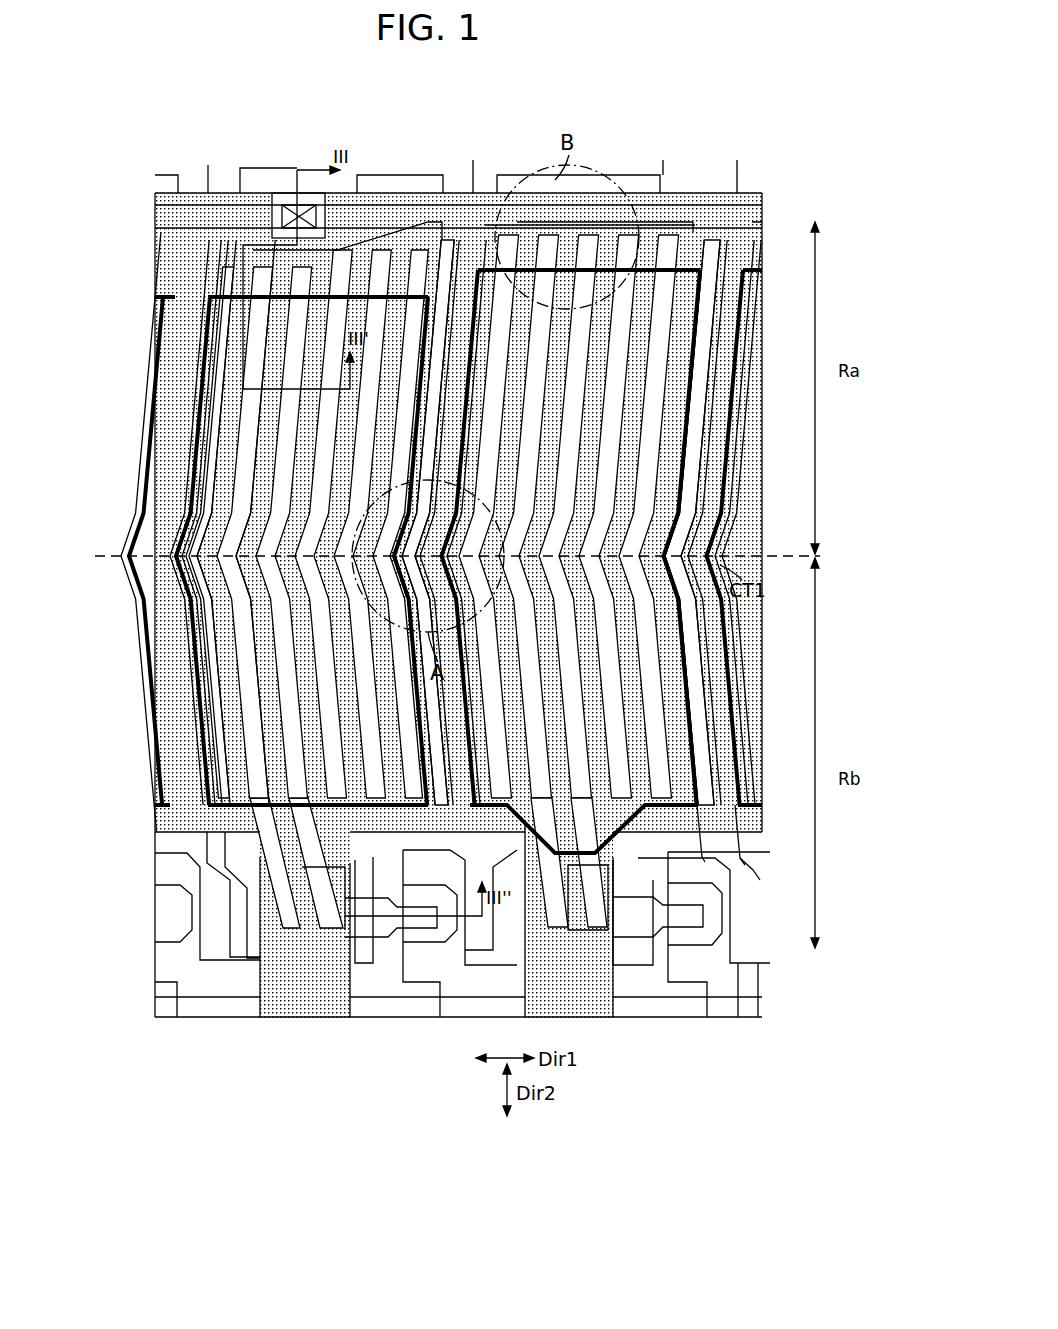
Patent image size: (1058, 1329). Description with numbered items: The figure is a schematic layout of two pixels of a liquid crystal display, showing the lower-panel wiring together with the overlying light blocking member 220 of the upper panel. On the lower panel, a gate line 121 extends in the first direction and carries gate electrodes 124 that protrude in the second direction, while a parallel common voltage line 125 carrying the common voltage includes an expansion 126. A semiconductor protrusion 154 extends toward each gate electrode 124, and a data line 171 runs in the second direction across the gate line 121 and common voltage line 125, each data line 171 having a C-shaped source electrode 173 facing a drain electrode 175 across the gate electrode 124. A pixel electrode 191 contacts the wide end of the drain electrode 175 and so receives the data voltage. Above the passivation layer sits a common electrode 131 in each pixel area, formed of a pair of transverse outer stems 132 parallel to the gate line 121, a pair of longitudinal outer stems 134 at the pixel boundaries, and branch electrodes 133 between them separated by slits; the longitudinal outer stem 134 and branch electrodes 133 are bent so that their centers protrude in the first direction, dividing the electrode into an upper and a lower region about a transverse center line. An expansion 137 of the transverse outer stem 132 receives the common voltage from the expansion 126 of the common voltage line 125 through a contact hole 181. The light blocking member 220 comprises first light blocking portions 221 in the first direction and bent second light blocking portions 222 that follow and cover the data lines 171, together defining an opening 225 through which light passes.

The gate line 121 is at (320, 1010).
The gate electrode 124 is at (755, 975).
The common voltage line 125 is at (620, 232).
The expansion 126 is at (270, 190).
The common electrode 131 is at (423, 1172).
The transverse outer stem 132 is at (372, 180).
The branch electrode 133 is at (245, 665).
The longitudinal outer stem 134 is at (185, 615).
The expansion 137 is at (230, 275).
The semiconductor protrusion 154 is at (385, 1000).
The data line 171 is at (704, 360).
The source electrode 173 is at (735, 835).
The drain electrode 175 is at (600, 980).
The contact hole 181 is at (298, 205).
The pixel electrode 191 is at (190, 518).
The light blocking member 220 is at (108, 366).
The first light blocking portion 221 is at (262, 322).
The second light blocking portion 222 is at (420, 443).
The opening 225 is at (176, 456).